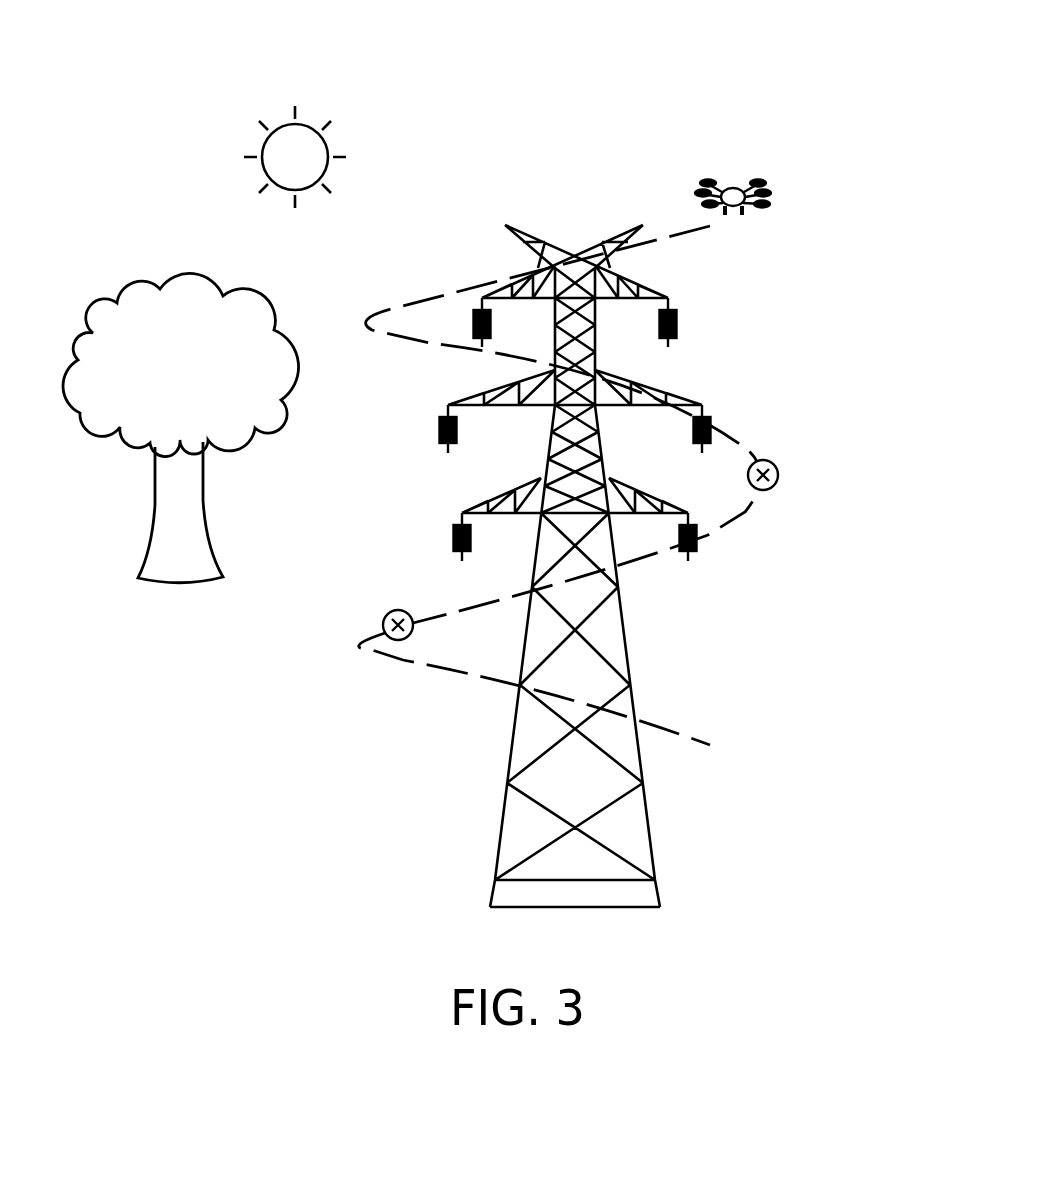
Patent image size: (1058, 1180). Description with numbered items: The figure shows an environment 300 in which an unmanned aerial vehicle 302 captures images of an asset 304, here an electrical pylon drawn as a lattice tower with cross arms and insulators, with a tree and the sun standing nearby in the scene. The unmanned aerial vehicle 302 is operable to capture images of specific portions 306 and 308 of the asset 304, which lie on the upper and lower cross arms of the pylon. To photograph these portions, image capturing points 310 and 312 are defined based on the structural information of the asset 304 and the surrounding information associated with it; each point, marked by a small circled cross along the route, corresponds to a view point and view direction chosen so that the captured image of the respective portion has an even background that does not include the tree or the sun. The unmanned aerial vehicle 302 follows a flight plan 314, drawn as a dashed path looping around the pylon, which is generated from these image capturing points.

The environment 300 is at (823, 87).
The unmanned aerial vehicle 302 is at (770, 200).
The asset 304 is at (488, 869).
The portion of the asset 306 is at (703, 410).
The portion of the asset 308 is at (452, 538).
The image capturing point 310 is at (778, 478).
The image capturing point 312 is at (385, 633).
The flight plan 314 is at (680, 727).